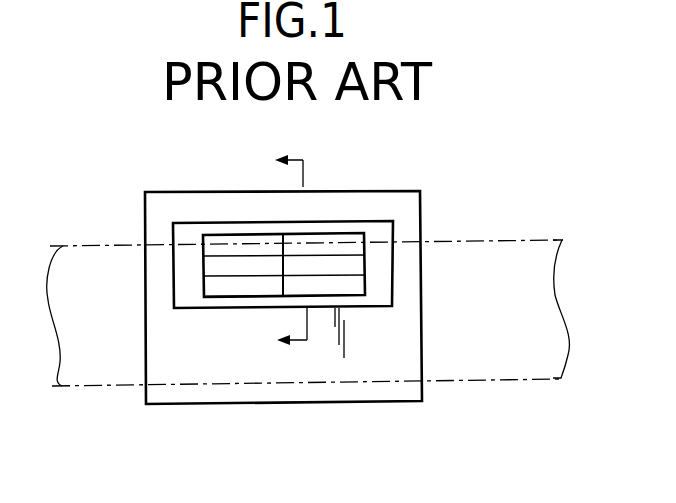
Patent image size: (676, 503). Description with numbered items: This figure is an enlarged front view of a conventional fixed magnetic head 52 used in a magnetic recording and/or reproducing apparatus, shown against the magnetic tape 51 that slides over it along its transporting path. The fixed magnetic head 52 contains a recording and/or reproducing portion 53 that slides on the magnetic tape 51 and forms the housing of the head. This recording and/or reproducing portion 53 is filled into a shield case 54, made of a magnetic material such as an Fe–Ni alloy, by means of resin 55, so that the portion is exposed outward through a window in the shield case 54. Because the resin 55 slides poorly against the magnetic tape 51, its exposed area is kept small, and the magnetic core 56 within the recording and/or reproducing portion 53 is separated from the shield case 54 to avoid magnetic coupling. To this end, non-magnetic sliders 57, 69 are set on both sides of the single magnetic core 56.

The magnetic tape 51 is at (517, 253).
The fixed magnetic head 52 is at (401, 180).
The recording and/or reproducing portion 53 is at (226, 232).
The shield case 54 is at (177, 200).
The resin 55 is at (199, 309).
The magnetic core 56 is at (355, 267).
The slider 57 is at (207, 243).
The slider 69 is at (210, 286).